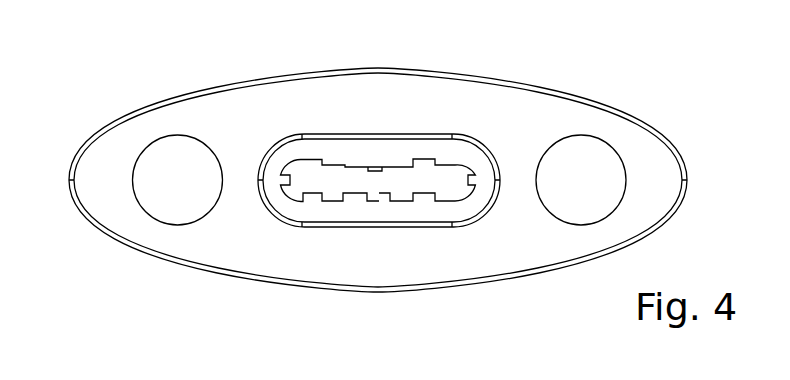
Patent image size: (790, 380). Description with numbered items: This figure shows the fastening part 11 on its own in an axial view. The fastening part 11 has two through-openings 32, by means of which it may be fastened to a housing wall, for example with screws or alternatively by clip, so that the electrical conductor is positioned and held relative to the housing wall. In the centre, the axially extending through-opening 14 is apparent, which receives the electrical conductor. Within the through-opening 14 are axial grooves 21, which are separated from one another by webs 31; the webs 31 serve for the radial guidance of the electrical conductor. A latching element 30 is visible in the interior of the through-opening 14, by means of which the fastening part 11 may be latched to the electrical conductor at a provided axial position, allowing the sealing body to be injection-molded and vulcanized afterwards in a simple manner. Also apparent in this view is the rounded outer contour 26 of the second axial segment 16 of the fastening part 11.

The fastening part 11 is at (645, 182).
The through-openings 32 is at (165, 148).
The rounded outer contour 26 is at (418, 133).
The axial grooves 21 is at (344, 186).
The through-opening 14 is at (340, 181).
The second axial segment 16 is at (402, 205).
The webs 31 is at (313, 162).
The latching element 30 is at (378, 163).